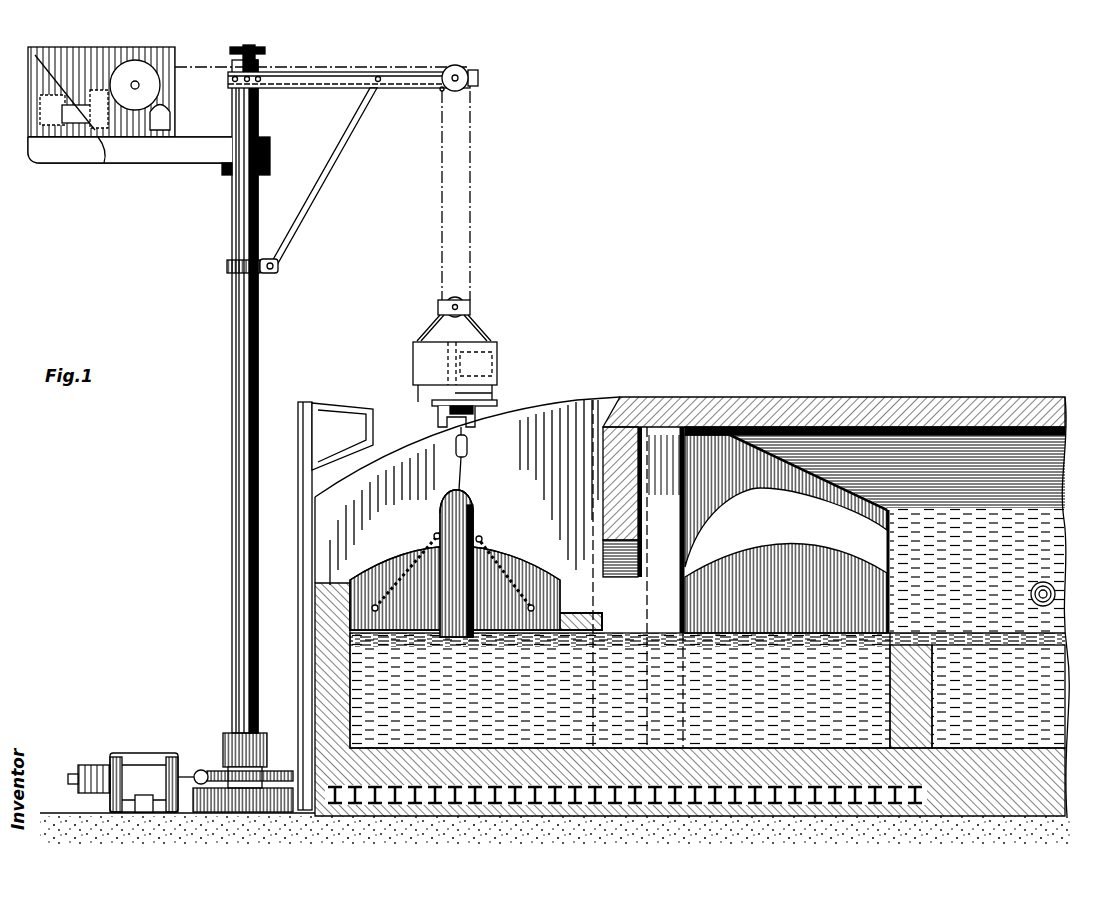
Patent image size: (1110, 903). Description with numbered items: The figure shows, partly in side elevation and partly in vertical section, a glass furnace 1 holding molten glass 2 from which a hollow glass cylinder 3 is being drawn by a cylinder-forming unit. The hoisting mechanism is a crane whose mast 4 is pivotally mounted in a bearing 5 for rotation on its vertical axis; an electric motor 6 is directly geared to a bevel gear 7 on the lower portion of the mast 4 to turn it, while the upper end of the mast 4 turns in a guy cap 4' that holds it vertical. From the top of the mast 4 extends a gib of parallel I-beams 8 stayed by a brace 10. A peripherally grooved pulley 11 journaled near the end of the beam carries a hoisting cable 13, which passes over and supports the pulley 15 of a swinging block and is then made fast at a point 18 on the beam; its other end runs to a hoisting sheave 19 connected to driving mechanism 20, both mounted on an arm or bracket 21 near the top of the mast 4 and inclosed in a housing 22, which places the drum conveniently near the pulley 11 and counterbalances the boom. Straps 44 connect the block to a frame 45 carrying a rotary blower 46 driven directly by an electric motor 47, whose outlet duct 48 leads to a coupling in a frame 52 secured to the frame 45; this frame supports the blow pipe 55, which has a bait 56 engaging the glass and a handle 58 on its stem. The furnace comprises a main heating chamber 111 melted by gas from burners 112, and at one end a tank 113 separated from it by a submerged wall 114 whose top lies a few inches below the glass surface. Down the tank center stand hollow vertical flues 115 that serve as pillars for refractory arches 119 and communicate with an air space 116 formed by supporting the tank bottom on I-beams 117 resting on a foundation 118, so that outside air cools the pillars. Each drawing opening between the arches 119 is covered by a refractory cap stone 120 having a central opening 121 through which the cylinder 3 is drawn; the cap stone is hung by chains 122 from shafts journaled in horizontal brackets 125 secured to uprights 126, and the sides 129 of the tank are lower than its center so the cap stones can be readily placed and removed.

The glass furnace 1 is at (665, 398).
The molten glass 2 is at (655, 648).
The hollow glass cylinder 3 is at (474, 522).
The mast 4 is at (232, 424).
The guy cap 4' is at (265, 57).
The bearing 5 is at (244, 794).
The electric motor 6 is at (160, 754).
The bevel gear 7 is at (206, 769).
The I-beam 8 is at (326, 84).
The brace 10 is at (316, 195).
The peripherally grooved pulley 11 is at (463, 69).
The hoisting cable 13 is at (470, 200).
The pulley 15 is at (446, 303).
The fastening point 18 is at (438, 91).
The hoisting sheave 19 is at (170, 100).
The driving mechanism 20 is at (100, 162).
The arm or bracket 21 is at (192, 157).
The housing 22 is at (165, 80).
The straps 44 is at (480, 328).
The frame 45 is at (413, 348).
The blower 46 is at (445, 368).
The electric motor 47 is at (492, 352).
The duct 48 is at (497, 395).
The frame 52 is at (435, 422).
The blow pipe 55 is at (462, 480).
The bait 56 is at (440, 500).
The handle 58 is at (468, 447).
The main heating chamber 111 is at (897, 534).
The burners 112 is at (1056, 594).
The tank 113 is at (890, 586).
The submerged wall 114 is at (916, 645).
The vertical flue 115 is at (621, 514).
The air space 116 is at (793, 790).
The I-beams 117 is at (512, 797).
The foundation 118 is at (648, 792).
The arches 119 is at (608, 492).
The cap stone 120 is at (495, 618).
The opening 121 is at (372, 580).
The chains 122 is at (517, 567).
The horizontal brackets 125 is at (337, 410).
The uprights 126 is at (298, 404).
The sides of the tank 129 is at (322, 655).